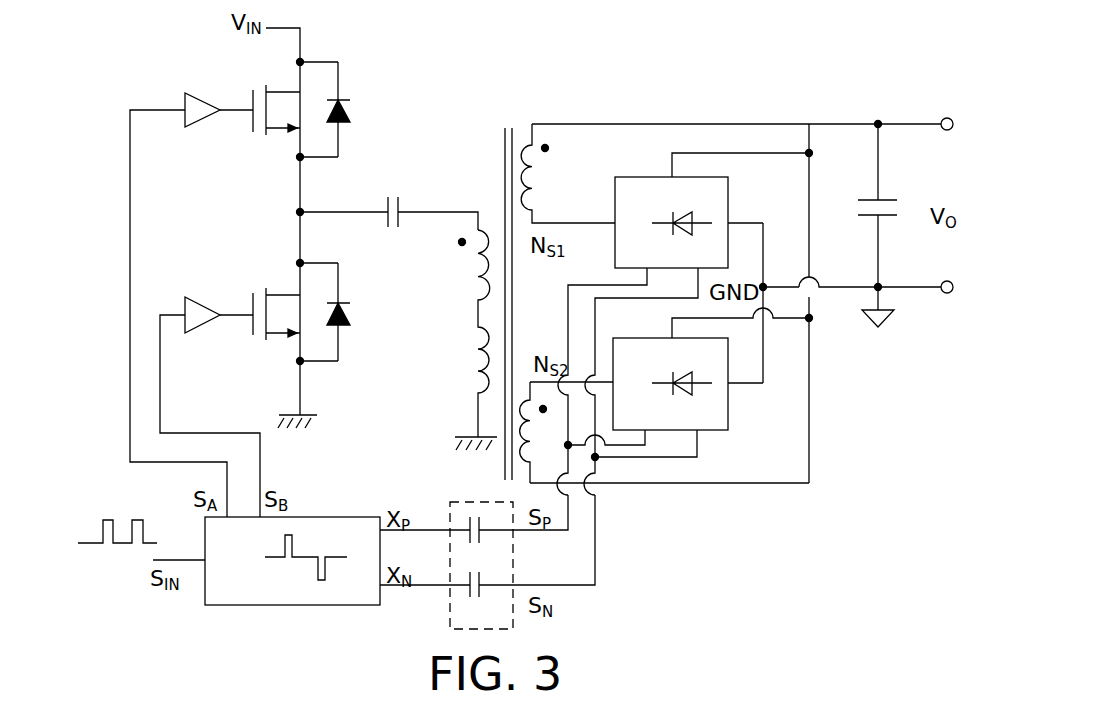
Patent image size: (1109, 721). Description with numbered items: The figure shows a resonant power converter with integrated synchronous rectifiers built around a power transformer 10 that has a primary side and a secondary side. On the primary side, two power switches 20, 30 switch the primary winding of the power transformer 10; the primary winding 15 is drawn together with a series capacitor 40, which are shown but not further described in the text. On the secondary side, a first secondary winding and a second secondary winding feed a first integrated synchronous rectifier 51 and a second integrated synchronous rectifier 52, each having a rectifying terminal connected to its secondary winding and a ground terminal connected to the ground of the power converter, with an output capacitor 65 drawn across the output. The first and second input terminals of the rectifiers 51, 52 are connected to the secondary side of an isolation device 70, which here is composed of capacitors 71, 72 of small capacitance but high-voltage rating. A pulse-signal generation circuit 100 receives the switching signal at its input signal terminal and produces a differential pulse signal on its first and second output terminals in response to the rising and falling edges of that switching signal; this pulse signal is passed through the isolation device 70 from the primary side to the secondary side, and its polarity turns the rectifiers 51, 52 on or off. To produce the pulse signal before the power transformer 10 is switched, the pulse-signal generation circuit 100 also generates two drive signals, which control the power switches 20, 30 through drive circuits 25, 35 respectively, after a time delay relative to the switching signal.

The power transformer 10 is at (491, 167).
The primary winding 15 is at (468, 340).
The power switch 20 is at (320, 75).
The drive circuit 25 is at (200, 117).
The power switch 30 is at (320, 282).
The drive circuit 35 is at (200, 322).
The coupling capacitor 40 is at (389, 193).
The first integrated synchronous rectifier 51 is at (718, 200).
The second integrated synchronous rectifier 52 is at (715, 407).
The output capacitor 65 is at (887, 205).
The isolation device 70 is at (462, 530).
The capacitor 71 is at (492, 542).
The capacitor 72 is at (492, 599).
The pulse-signal generation circuit 100 is at (342, 537).